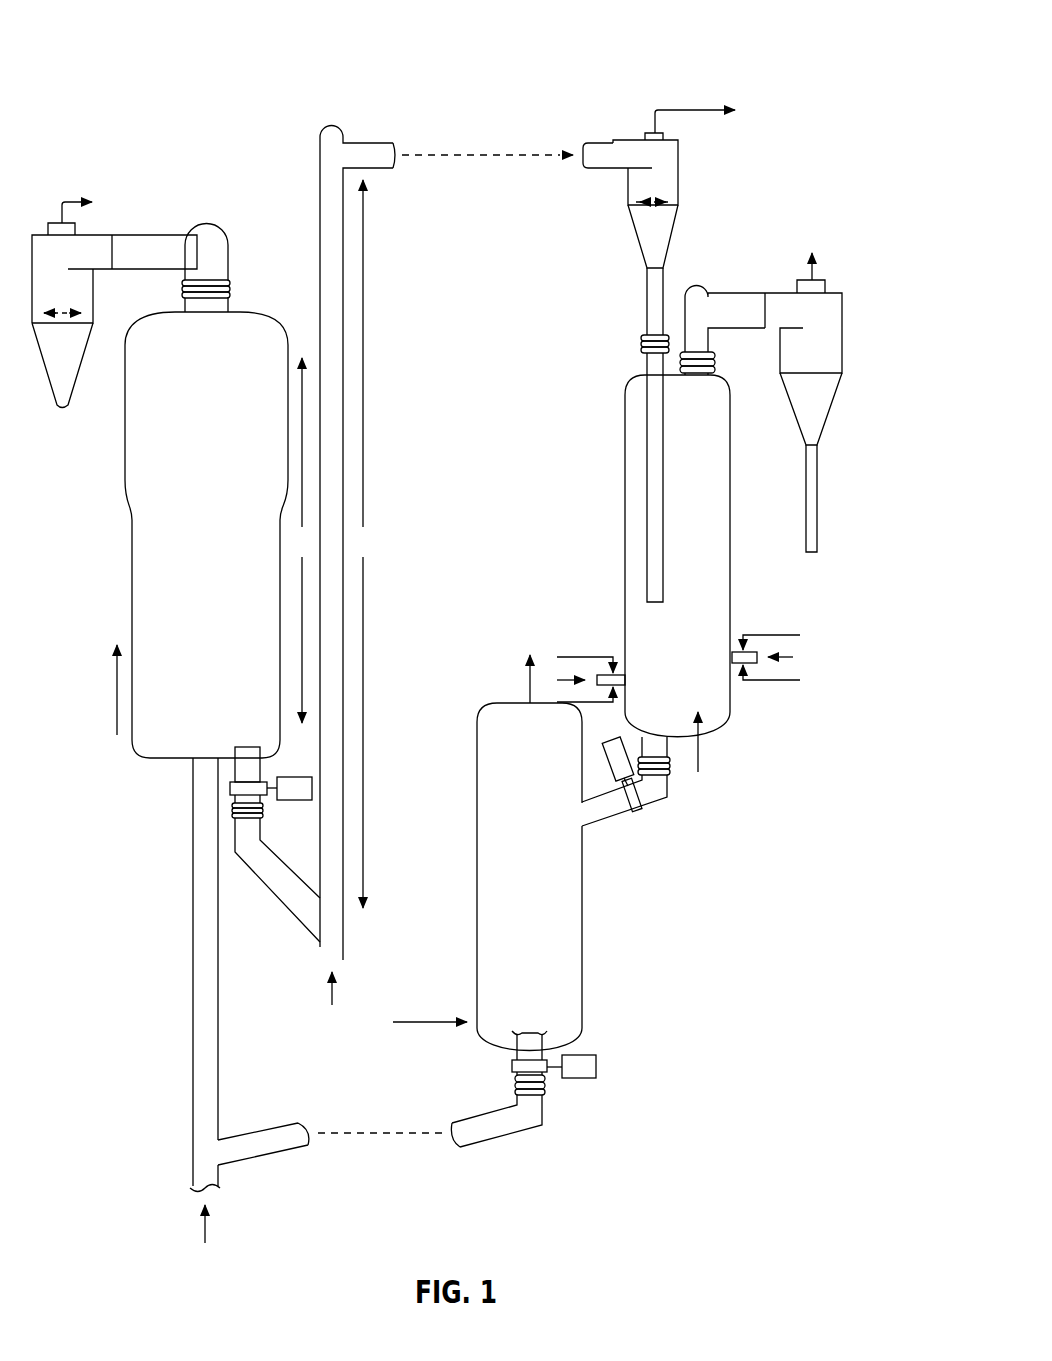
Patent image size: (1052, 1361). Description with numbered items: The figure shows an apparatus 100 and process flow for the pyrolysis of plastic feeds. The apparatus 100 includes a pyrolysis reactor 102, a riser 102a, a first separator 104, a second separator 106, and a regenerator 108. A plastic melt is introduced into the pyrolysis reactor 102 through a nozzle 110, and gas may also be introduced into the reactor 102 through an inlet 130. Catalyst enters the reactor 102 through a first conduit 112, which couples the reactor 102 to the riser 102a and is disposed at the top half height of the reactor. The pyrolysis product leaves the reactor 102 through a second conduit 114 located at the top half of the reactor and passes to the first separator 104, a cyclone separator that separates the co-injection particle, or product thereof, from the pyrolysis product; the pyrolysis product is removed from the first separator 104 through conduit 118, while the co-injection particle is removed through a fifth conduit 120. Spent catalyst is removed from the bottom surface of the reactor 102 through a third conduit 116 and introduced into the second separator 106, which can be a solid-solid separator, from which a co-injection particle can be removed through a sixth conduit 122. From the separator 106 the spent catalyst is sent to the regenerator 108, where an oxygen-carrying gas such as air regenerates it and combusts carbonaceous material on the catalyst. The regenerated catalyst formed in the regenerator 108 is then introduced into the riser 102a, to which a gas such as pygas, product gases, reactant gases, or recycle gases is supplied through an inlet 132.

The apparatus 100 is at (152, 44).
The pyrolysis reactor 102 is at (623, 442).
The riser 102a is at (318, 220).
The first separator 104 is at (832, 292).
The second separator 106 is at (585, 875).
The regenerator 108 is at (125, 500).
The nozzle 110 is at (753, 665).
The first conduit 112 is at (643, 303).
The second conduit 114 is at (692, 302).
The third conduit 116 is at (652, 783).
The conduit 118 is at (793, 292).
The fifth conduit 120 is at (818, 498).
The sixth conduit 122 is at (530, 659).
The inlet 130 is at (700, 737).
The inlet 132 is at (333, 1005).